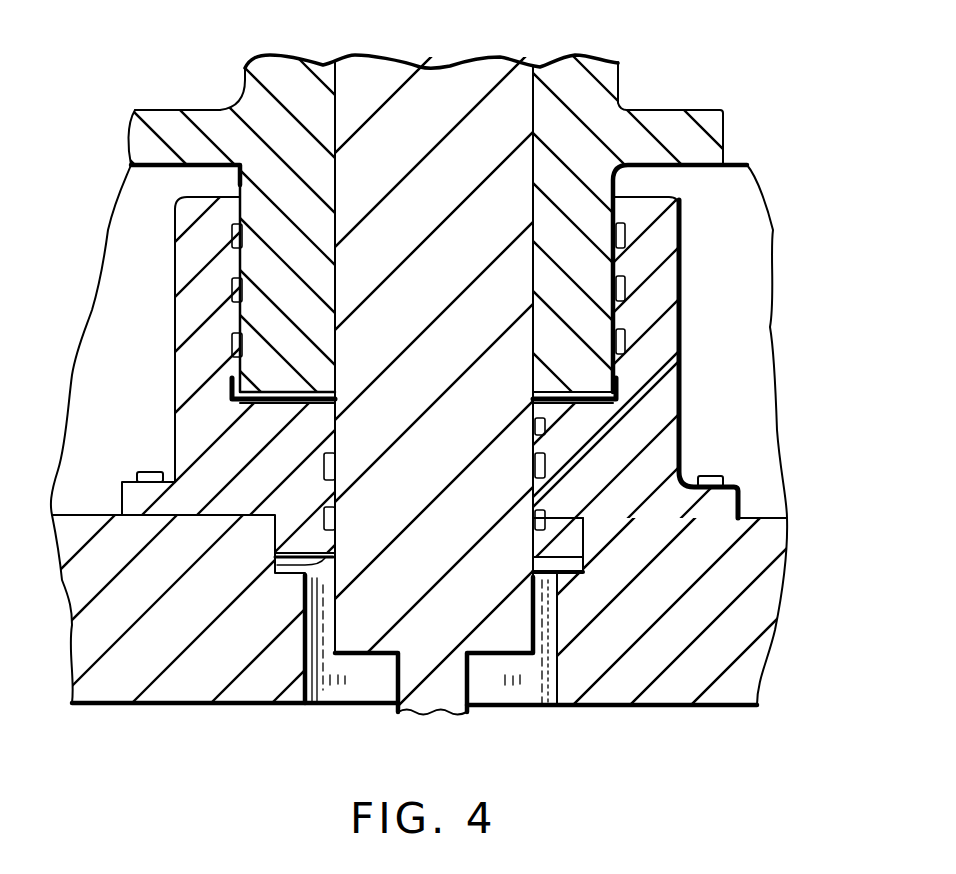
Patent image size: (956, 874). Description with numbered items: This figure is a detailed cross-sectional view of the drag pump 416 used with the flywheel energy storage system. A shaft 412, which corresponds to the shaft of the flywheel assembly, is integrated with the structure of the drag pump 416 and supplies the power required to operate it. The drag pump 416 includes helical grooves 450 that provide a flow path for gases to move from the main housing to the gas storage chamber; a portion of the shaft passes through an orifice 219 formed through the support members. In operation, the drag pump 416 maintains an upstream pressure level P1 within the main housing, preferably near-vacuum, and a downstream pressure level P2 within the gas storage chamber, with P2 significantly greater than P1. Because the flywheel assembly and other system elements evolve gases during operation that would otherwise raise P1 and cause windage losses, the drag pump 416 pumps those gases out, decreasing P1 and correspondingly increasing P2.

The shaft 412 is at (488, 73).
The drag pump 416 is at (705, 222).
The helical grooves 450 is at (626, 344).
The orifice 219 is at (278, 563).
The upstream pressure level P1 is at (146, 385).
The downstream pressure level P2 is at (357, 688).